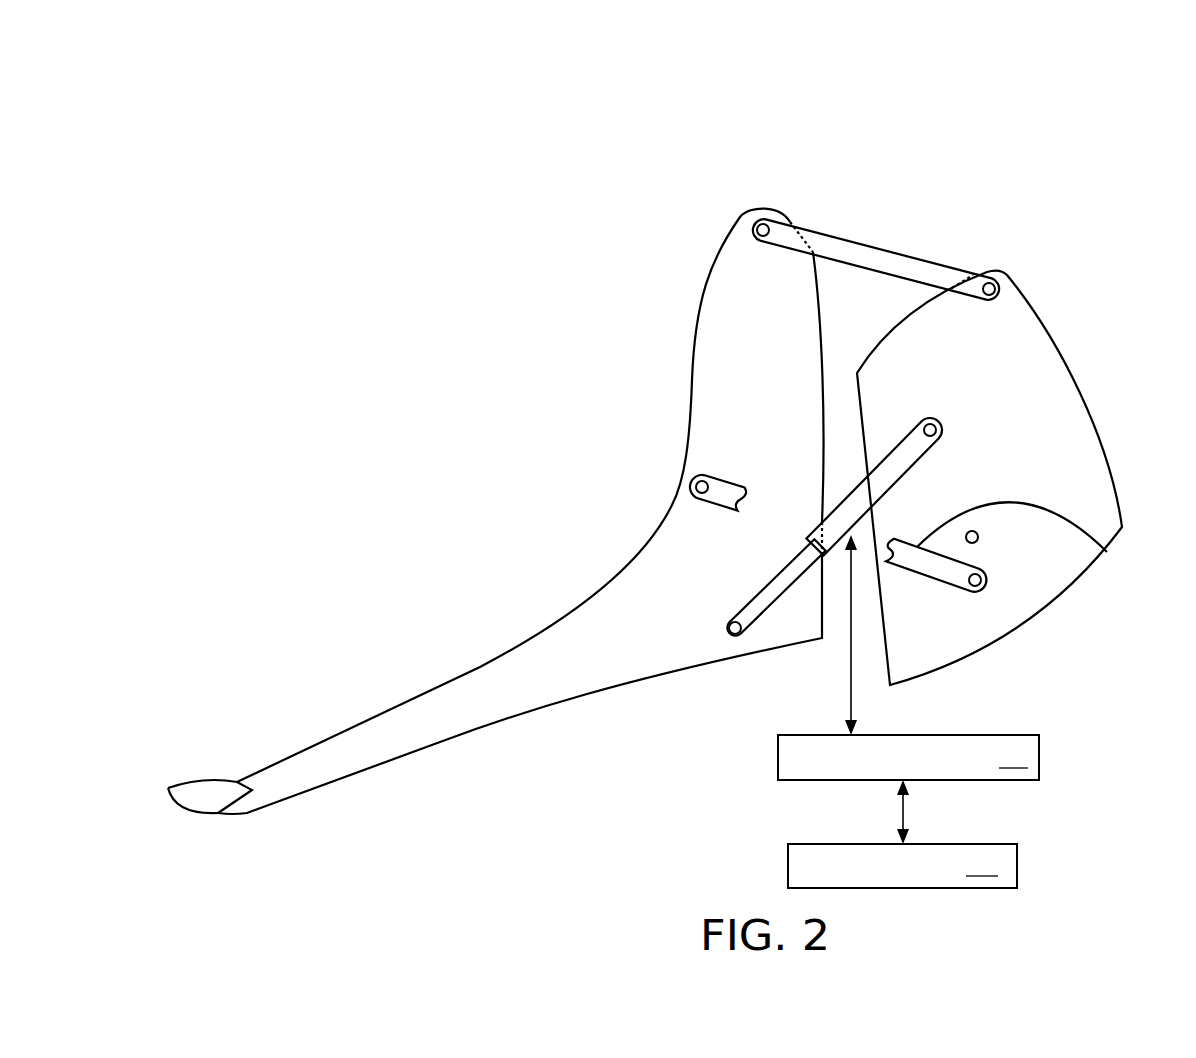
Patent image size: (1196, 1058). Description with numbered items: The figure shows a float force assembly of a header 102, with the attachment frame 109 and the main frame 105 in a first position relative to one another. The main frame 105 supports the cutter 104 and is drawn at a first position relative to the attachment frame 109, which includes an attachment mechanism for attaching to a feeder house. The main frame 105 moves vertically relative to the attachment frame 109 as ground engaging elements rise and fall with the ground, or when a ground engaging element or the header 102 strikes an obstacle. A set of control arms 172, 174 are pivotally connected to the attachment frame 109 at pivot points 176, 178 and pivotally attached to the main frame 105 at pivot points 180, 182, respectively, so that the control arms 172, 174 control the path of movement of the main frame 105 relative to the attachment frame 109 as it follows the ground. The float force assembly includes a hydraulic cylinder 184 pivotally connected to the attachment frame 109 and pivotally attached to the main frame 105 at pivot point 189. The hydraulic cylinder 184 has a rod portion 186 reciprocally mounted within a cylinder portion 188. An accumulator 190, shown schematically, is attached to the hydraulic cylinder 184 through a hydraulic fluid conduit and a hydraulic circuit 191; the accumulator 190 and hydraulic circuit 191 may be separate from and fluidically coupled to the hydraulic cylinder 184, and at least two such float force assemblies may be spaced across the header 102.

The header 102 is at (726, 96).
The cutter 104 is at (189, 768).
The main frame 105 is at (582, 697).
The attachment frame 109 is at (1100, 442).
The control arm 172 is at (883, 248).
The control arm 174 is at (1103, 553).
The pivot point 176 is at (1007, 274).
The pivot point 178 is at (940, 416).
The pivot point 180 is at (768, 213).
The pivot point 182 is at (693, 487).
The hydraulic cylinder 184 is at (800, 564).
The rod portion 186 is at (738, 605).
The cylinder portion 188 is at (938, 442).
The pivot point 189 is at (725, 628).
The accumulator 190 is at (902, 866).
The hydraulic circuit 191 is at (908, 789).